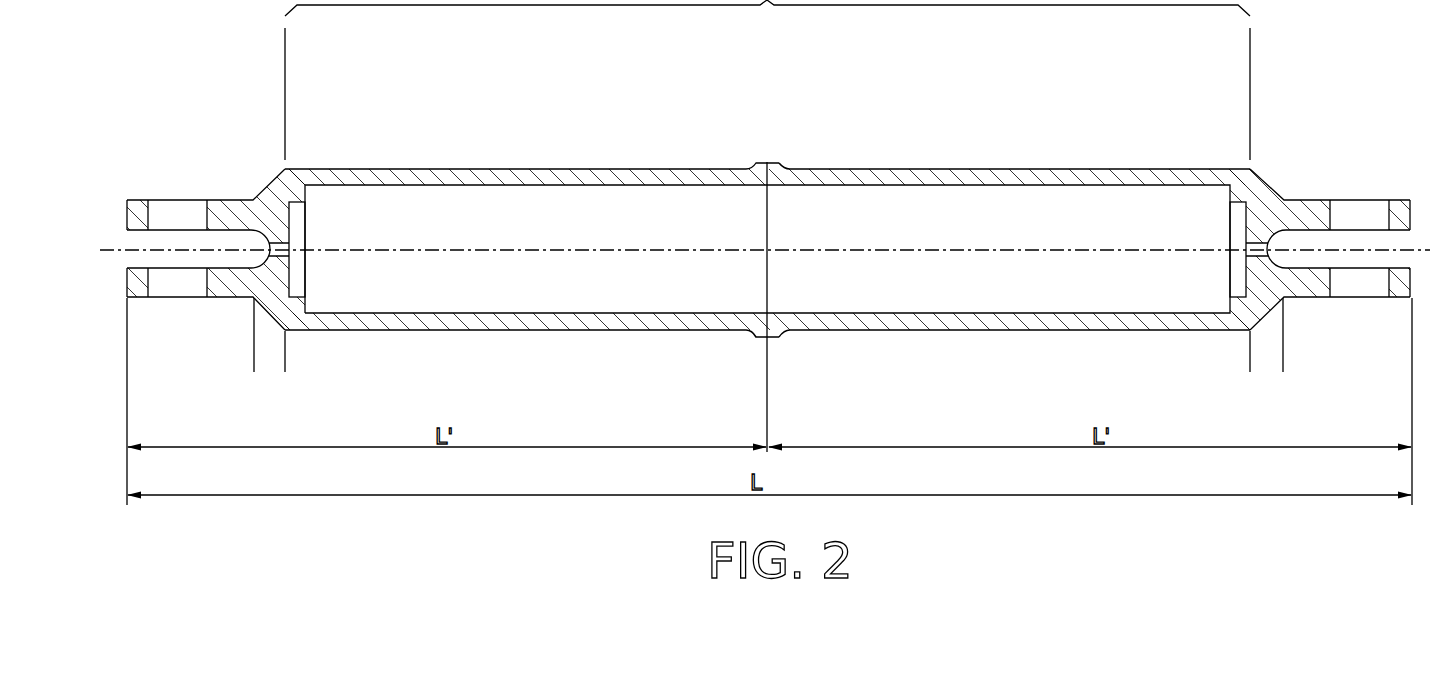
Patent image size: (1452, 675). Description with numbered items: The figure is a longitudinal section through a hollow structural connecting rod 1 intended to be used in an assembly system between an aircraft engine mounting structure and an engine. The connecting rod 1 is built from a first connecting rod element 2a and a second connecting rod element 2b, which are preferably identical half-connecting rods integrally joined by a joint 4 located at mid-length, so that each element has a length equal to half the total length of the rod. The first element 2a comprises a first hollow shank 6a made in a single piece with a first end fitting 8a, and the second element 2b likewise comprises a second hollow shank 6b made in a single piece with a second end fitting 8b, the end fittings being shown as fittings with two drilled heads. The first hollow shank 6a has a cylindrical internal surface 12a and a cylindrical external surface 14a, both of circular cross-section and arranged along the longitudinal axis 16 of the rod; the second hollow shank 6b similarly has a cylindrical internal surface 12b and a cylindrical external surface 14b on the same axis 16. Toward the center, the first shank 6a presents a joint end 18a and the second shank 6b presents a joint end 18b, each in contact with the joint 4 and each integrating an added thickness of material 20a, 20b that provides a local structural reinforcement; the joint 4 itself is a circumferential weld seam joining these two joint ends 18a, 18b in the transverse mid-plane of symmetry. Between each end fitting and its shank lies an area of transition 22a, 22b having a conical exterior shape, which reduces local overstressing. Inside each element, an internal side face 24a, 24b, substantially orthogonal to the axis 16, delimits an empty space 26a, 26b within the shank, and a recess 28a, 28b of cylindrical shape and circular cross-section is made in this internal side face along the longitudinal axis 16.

The hollow structural connecting rod 1 is at (505, 82).
The first connecting rod element 2a is at (532, 220).
The second connecting rod element 2b is at (1008, 220).
The joint 4 is at (774, 278).
The first hollow shank 6a is at (553, 180).
The second hollow shank 6b is at (926, 180).
The first end fitting 8a is at (255, 271).
The second end fitting 8b is at (1281, 274).
The cylindrical internal surface 12a is at (492, 186).
The cylindrical internal surface 12b is at (1012, 186).
The cylindrical external surface 14a is at (449, 168).
The cylindrical external surface 14b is at (1028, 168).
The longitudinal axis 16 is at (112, 249).
The joint end 18a is at (749, 190).
The joint end 18b is at (788, 190).
The added thickness of material 20a is at (760, 165).
The added thickness of material 20b is at (773, 340).
The area of transition 22a is at (267, 367).
The area of transition 22b is at (1264, 367).
The internal side face 24a is at (305, 195).
The internal side face 24b is at (1230, 195).
The empty space 26a is at (547, 295).
The empty space 26b is at (1032, 295).
The recess 28a is at (292, 272).
The recess 28b is at (1246, 272).